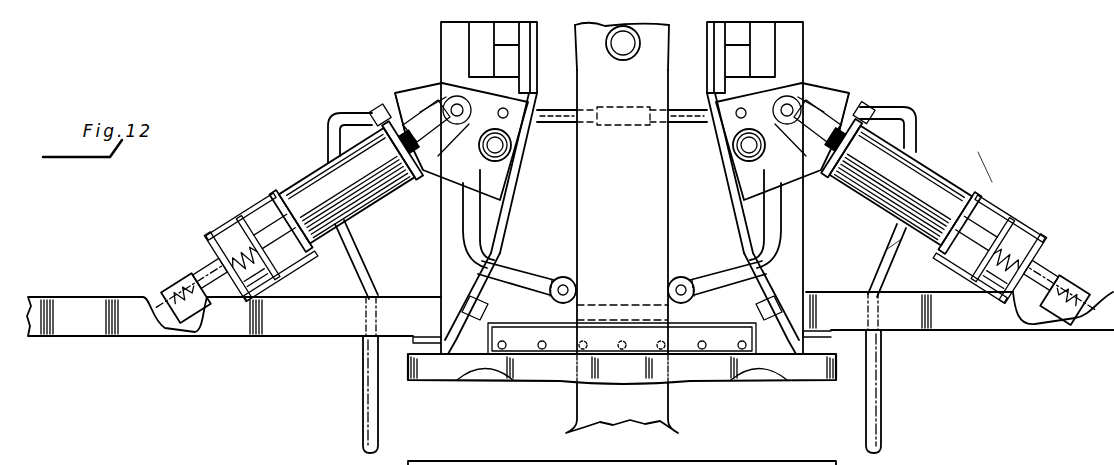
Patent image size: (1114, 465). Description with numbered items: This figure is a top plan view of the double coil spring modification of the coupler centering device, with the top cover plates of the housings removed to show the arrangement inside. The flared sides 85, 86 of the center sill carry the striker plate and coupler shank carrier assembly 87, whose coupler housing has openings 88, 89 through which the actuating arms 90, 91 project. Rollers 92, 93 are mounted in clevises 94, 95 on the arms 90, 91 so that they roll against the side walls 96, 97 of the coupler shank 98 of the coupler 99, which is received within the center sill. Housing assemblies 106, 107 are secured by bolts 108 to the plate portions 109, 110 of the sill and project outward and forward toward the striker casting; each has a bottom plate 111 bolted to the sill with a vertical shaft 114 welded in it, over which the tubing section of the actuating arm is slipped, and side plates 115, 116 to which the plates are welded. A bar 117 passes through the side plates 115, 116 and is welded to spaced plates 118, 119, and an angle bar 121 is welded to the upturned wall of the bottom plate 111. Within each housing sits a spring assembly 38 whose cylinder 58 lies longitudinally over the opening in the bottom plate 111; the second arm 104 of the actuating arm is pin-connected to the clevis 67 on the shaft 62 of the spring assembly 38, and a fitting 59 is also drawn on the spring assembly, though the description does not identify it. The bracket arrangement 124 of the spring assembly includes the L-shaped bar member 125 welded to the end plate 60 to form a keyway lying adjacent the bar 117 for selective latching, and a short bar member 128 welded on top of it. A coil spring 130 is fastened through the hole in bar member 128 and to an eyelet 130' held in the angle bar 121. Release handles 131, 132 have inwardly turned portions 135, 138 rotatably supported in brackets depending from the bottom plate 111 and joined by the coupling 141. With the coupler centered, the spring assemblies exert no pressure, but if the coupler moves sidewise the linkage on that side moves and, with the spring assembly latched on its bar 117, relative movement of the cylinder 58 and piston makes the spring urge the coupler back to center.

The spring assembly 38 is at (400, 199).
The cylinder 58 is at (360, 253).
The fluid conduit elbow 59 is at (380, 110).
The end plate 60 is at (276, 200).
The shaft 62 is at (418, 182).
The clevis 67 is at (437, 94).
The flared side of sill 85 is at (519, 180).
The flared side of sill 86 is at (735, 180).
The striker plate and coupler shank carrier assembly 87 is at (703, 459).
The opening 88 is at (467, 266).
The opening 89 is at (771, 266).
The actuating arm 90 is at (777, 223).
The actuating arm 91 is at (462, 223).
The roller 92 is at (568, 276).
The roller 93 is at (694, 276).
The clevis 94 is at (528, 276).
The clevis 95 is at (726, 276).
The side wall of coupler shank 96 is at (577, 237).
The side wall of coupler shank 97 is at (668, 237).
The coupler shank 98 is at (636, 206).
The coupler 99 is at (569, 396).
The second arm 104 is at (470, 114).
The housing assembly 106 is at (306, 169).
The housing assembly 107 is at (952, 162).
The bolts 108 is at (512, 132).
The plate portion of center sill 109 is at (439, 265).
The plate portion of center sill 110 is at (803, 262).
The bottom plate 111 is at (401, 108).
The shaft 114 is at (511, 151).
The side plate 115 is at (979, 152).
The side plate 116 is at (887, 250).
The bar 117 is at (302, 262).
The spaced plate 118 is at (222, 250).
The spaced plate 119 is at (258, 298).
The angle bar 121 is at (202, 328).
The bracket arrangement 124 is at (258, 230).
The L-shaped bar member 125 is at (252, 208).
The short bar member 128 is at (280, 278).
The coil spring 130 is at (625, 273).
The eyelet 130' is at (623, 295).
The release handle 131 is at (365, 412).
The release handle 132 is at (881, 392).
The inwardly turned portion 135 is at (550, 109).
The inwardly turned portion 138 is at (686, 109).
The coupling 141 is at (609, 120).